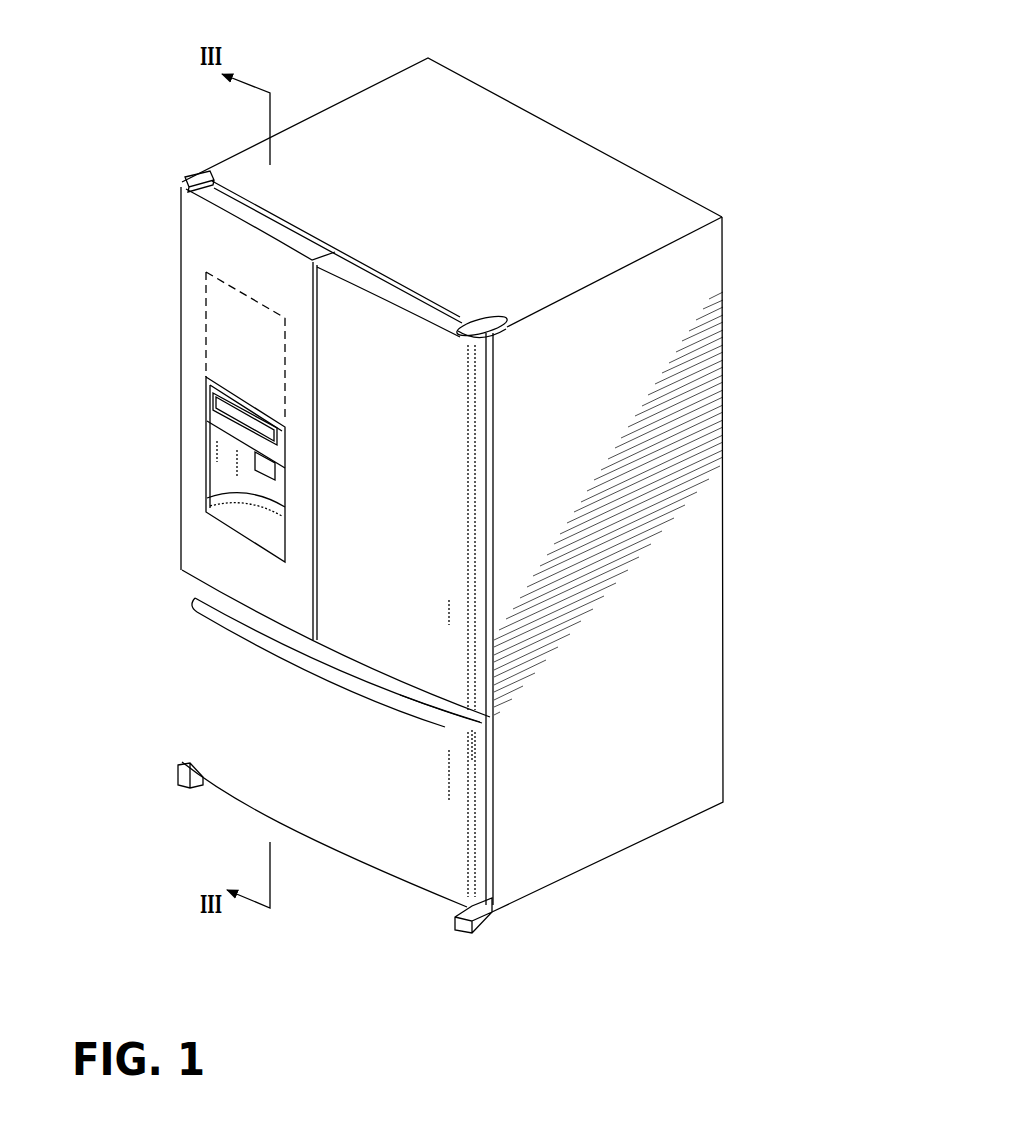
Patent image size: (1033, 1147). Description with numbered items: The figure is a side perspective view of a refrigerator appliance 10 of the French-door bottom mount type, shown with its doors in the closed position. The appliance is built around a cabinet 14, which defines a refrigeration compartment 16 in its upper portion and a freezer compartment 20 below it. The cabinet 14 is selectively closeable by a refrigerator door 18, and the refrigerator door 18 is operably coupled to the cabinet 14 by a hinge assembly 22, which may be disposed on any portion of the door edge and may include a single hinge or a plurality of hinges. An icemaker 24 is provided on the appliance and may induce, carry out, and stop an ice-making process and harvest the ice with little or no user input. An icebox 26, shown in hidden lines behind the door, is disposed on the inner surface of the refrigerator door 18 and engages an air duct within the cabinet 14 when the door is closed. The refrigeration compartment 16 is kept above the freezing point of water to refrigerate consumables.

The refrigerator appliance 10 is at (608, 71).
The cabinet 14 is at (672, 680).
The refrigeration compartment 16 is at (612, 395).
The refrigerator door 18 is at (200, 358).
The freezer compartment 20 is at (258, 690).
The hinge assembly 22 is at (203, 176).
The icemaker 24 is at (203, 419).
The icebox 26 is at (235, 333).